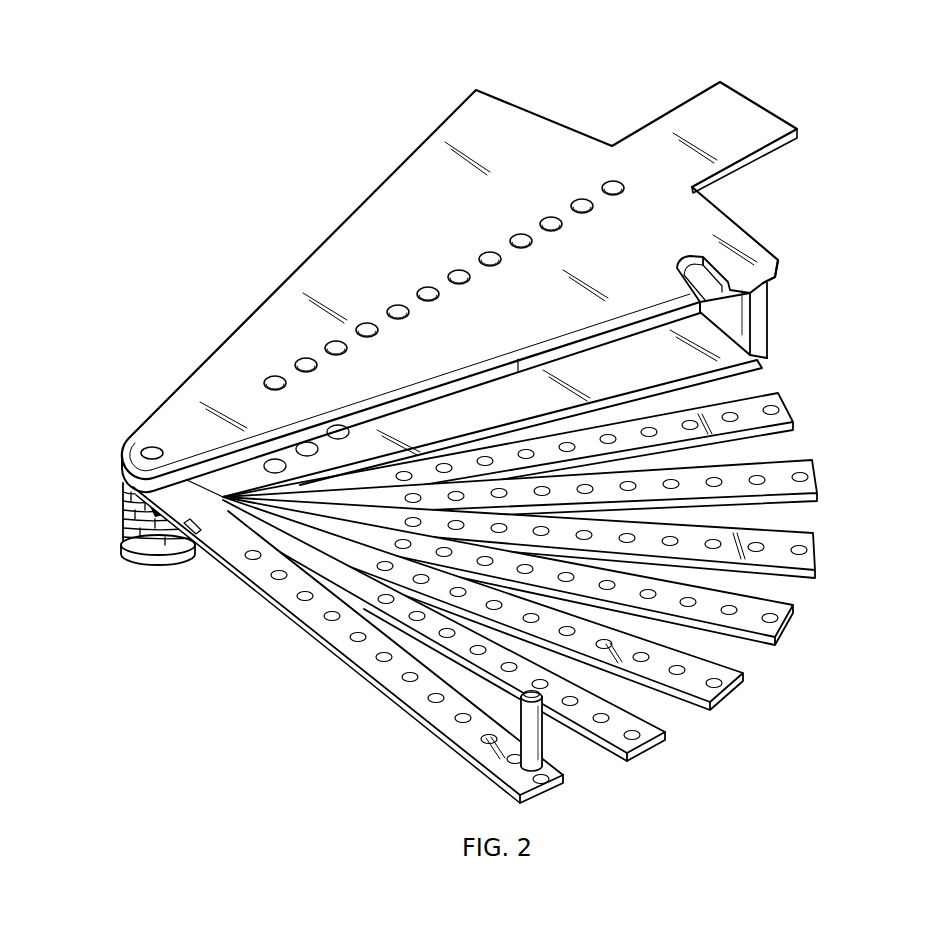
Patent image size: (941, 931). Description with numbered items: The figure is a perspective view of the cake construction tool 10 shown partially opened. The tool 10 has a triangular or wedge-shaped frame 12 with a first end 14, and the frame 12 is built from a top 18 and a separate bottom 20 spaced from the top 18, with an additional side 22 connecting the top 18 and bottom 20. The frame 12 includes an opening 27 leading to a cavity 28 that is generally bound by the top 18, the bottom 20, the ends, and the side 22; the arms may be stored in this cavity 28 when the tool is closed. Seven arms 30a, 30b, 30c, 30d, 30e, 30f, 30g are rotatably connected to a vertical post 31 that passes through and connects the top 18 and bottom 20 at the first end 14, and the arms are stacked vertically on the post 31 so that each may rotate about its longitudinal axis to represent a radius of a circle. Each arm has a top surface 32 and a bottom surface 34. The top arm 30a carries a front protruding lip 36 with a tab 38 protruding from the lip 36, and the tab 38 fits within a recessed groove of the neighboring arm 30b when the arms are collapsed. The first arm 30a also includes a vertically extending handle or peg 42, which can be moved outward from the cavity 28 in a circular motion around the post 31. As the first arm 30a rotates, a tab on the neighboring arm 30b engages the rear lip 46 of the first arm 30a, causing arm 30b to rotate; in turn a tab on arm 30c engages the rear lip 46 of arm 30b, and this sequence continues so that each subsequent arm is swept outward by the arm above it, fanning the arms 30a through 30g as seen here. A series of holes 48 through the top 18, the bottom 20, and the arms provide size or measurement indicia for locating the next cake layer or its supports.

The cake construction tool 10 is at (599, 82).
The frame 12 is at (472, 124).
The first end 14 is at (86, 456).
The top 18 is at (745, 242).
The bottom 20 is at (784, 363).
The side 22 is at (762, 325).
The opening 27 is at (732, 352).
The cavity 28 is at (732, 350).
The vertical post 31 is at (148, 450).
The top surface 32 is at (548, 775).
The bottom surface 34 is at (543, 794).
The front protruding lip 36 is at (235, 573).
The tab 38 is at (185, 560).
The peg 42 is at (535, 708).
The rear lip 46 is at (657, 744).
The holes 48 is at (622, 192).
The first arm 30a is at (455, 727).
The arm 30b is at (668, 731).
The arm 30c is at (745, 676).
The arm 30d is at (793, 606).
The arm 30e is at (813, 537).
The arm 30f is at (812, 467).
The arm 30g is at (793, 428).